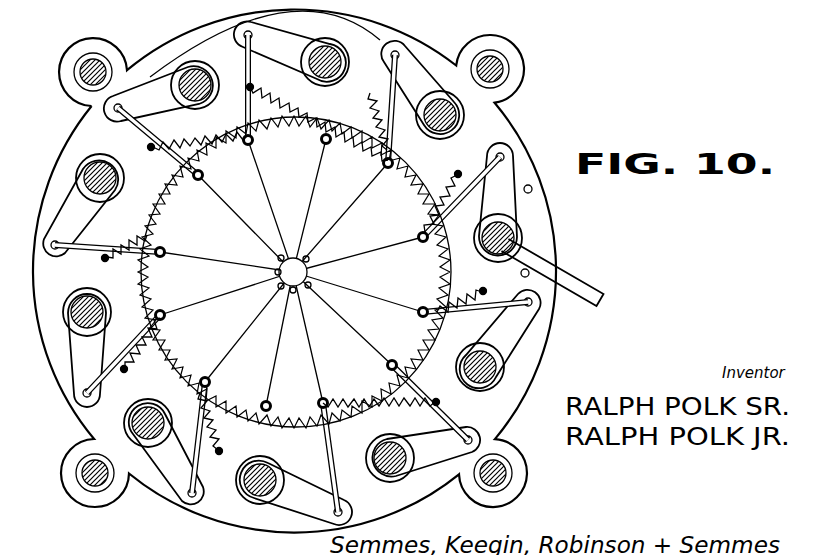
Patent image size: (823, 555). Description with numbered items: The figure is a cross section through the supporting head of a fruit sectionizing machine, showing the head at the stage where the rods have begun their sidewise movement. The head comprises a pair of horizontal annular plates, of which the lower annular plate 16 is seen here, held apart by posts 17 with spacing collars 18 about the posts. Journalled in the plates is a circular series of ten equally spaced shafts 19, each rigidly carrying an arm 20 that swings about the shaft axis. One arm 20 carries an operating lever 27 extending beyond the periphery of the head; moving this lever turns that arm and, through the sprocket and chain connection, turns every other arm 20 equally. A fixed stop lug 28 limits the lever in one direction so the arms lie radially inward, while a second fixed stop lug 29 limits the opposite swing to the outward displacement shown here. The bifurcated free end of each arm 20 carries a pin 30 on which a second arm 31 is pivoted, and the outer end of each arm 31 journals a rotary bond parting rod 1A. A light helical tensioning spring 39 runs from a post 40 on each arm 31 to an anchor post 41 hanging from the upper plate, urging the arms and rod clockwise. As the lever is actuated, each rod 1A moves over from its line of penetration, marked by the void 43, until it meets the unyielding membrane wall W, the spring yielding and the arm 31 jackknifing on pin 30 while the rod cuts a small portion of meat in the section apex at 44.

The rotary bond parting rod 1A is at (250, 150).
The annular plate 16 is at (280, 530).
The post 17 is at (100, 63).
The spacing collar 18 is at (80, 85).
The shaft 19 is at (327, 70).
The arm 20 is at (323, 46).
The operating lever 27 is at (553, 272).
The fixed stop lug 28 is at (533, 190).
The second fixed stop lug 29 is at (520, 273).
The pin 30 is at (118, 113).
The second arm 31 is at (483, 167).
The helical tensioning spring 39 is at (280, 113).
The post 40 is at (423, 232).
The anchor post 41 is at (293, 260).
The void 43 is at (310, 272).
The cut portion of meat 44 is at (291, 272).
The membrane wall W is at (367, 290).